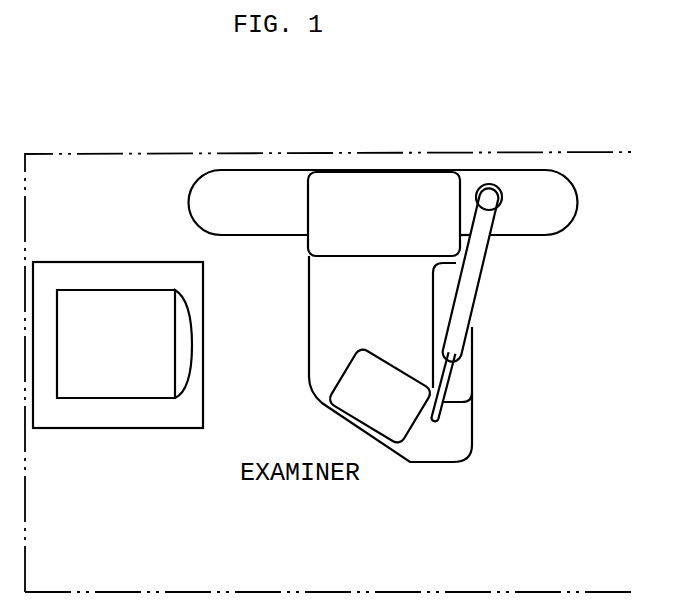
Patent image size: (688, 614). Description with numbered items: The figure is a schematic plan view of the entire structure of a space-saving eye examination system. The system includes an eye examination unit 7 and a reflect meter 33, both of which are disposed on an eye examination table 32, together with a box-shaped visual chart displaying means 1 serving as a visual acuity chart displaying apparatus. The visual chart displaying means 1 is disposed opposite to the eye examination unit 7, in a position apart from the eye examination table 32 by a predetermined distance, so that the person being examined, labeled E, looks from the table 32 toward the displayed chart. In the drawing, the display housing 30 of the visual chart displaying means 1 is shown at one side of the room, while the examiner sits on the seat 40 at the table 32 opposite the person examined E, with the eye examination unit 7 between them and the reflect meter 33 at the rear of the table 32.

The visual chart displaying means 1 is at (126, 255).
The eye examination unit 7 is at (480, 378).
The display apparatus 30 is at (203, 446).
The eye examination table 32 is at (308, 291).
The reflect meter 33 is at (412, 170).
The seat 40 is at (390, 450).
The person examined E is at (555, 292).